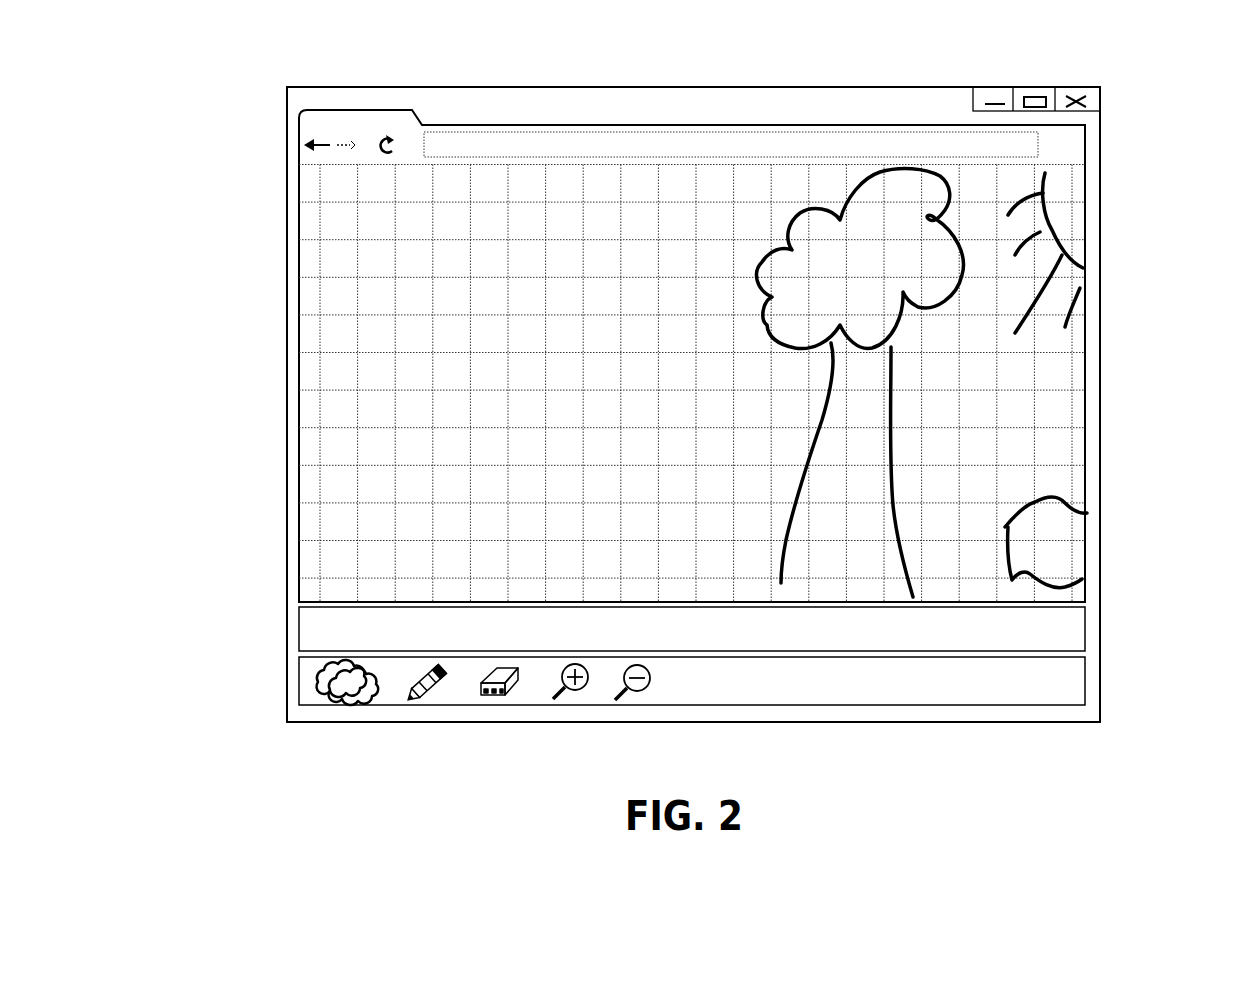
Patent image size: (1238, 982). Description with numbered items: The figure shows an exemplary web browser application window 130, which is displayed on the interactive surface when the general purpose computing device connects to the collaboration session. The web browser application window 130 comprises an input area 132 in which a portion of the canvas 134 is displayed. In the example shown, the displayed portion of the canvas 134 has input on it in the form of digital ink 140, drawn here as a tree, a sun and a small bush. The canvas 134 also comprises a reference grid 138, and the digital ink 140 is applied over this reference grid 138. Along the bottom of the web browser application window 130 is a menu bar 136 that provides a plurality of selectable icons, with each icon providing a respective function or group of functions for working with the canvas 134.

The web browser application window 130 is at (266, 96).
The input area 132 is at (1088, 470).
The canvas 134 is at (1005, 387).
The menu bar 136 is at (819, 685).
The reference grid 138 is at (355, 365).
The digital ink 140 is at (1048, 212).